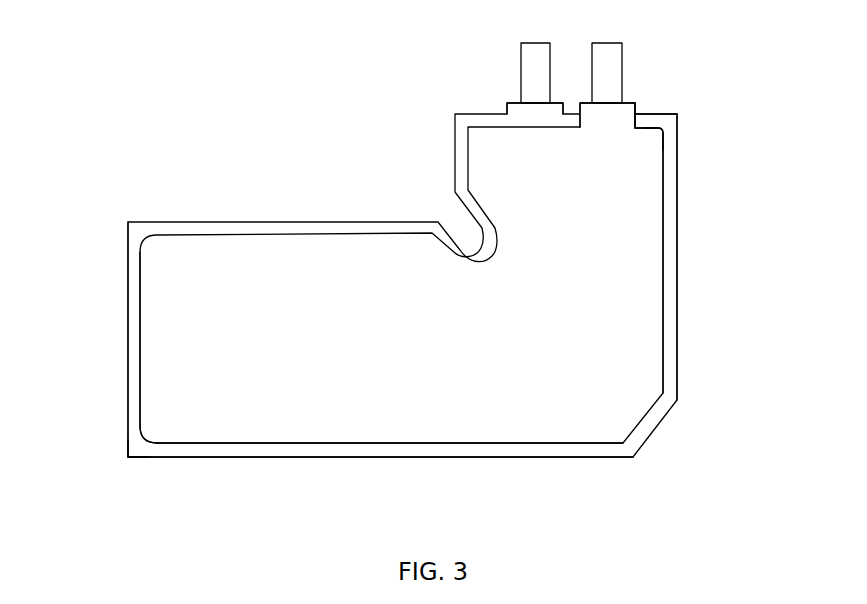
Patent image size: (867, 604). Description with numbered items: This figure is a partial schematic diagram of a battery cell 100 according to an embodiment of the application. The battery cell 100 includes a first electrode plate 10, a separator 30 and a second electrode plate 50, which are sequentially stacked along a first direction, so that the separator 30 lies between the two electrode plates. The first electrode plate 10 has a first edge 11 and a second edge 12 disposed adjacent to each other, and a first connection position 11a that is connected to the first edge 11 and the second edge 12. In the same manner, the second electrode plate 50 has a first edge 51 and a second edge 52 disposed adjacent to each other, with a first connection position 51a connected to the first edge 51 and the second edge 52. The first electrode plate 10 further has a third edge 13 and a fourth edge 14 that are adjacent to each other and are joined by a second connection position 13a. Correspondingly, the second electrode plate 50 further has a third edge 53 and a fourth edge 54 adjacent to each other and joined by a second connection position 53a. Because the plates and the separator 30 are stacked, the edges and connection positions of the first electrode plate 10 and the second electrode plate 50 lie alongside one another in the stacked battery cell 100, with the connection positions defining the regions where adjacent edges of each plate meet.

The battery cell 100 is at (322, 46).
The first electrode plate 10 is at (637, 178).
The separator 30 is at (677, 258).
The second electrode plate 50 is at (498, 108).
The first edge 11 is at (85, 339).
The first edge 51 is at (140, 325).
The first connection position 11a is at (102, 464).
The first connection position 51a is at (145, 438).
The second edge 12 is at (380, 482).
The second edge 52 is at (397, 445).
The third edge 13 is at (729, 257).
The third edge 53 is at (663, 318).
The second connection position 13a is at (732, 127).
The second connection position 53a is at (656, 129).
The fourth edge 14 is at (699, 93).
The fourth edge 54 is at (640, 122).